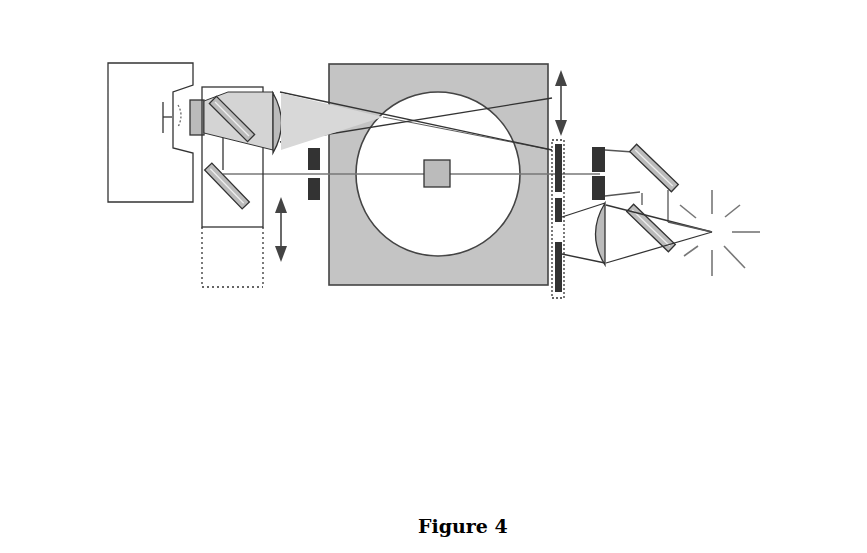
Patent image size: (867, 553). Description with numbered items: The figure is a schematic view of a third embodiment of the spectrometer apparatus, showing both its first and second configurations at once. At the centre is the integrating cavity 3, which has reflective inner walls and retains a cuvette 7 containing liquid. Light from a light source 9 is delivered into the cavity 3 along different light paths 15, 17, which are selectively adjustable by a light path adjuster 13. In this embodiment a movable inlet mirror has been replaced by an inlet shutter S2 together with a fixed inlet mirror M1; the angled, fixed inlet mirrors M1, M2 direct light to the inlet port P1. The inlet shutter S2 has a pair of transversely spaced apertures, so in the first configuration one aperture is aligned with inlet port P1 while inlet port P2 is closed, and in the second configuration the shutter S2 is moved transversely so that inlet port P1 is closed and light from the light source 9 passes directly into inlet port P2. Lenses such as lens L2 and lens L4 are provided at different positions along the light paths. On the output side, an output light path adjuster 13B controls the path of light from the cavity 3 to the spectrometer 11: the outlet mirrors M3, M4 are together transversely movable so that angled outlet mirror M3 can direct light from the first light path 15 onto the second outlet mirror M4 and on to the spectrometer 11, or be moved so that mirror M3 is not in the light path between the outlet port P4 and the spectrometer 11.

The integrating cavity 3 is at (372, 78).
The cuvette 7 is at (440, 183).
The light source 9 is at (717, 227).
The spectrometer 11 is at (118, 130).
The light path adjuster 13 is at (646, 355).
The output light path adjuster 13B is at (219, 316).
The first light path 15 is at (576, 173).
The second light path 17 is at (401, 232).
The fixed inlet mirror M1 is at (660, 243).
The inlet mirror M2 is at (657, 170).
The angled outlet mirror M3 is at (230, 192).
The second outlet mirror M4 is at (222, 110).
The lens L2 is at (600, 235).
The lens L4 is at (278, 107).
The inlet port P1 is at (550, 150).
The inlet port P2 is at (556, 235).
The light outlet port P4 is at (313, 113).
The inlet shutter S2 is at (558, 273).